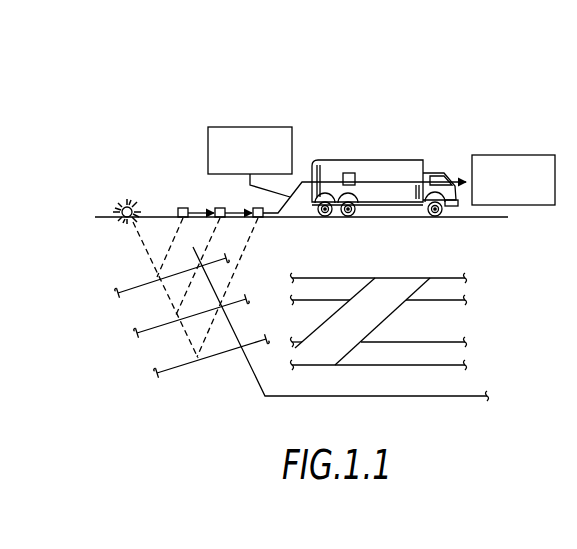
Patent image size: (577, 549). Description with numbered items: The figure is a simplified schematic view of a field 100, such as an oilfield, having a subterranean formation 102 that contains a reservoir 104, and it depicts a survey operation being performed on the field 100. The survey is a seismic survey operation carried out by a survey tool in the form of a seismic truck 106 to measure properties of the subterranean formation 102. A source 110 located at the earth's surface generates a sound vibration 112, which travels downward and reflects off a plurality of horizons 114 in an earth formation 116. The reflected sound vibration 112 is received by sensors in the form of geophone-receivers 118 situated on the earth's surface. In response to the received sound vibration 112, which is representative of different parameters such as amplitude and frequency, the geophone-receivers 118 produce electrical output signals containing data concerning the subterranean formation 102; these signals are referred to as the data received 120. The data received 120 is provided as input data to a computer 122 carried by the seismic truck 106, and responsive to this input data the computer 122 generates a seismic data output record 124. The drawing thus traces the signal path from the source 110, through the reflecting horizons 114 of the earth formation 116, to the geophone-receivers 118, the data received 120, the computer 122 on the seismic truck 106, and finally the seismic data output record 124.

The field 100 is at (502, 135).
The subterranean formation 102 is at (443, 270).
The reservoir 104 is at (447, 329).
The seismic truck 106 is at (413, 161).
The source 110 is at (122, 201).
The sound vibration 112 is at (170, 249).
The horizons 114 is at (130, 288).
The earth formation 116 is at (250, 372).
The geophone-receivers 118 is at (256, 208).
The data received 120 is at (238, 127).
The computer 122 is at (354, 173).
The seismic data output record 124 is at (528, 155).